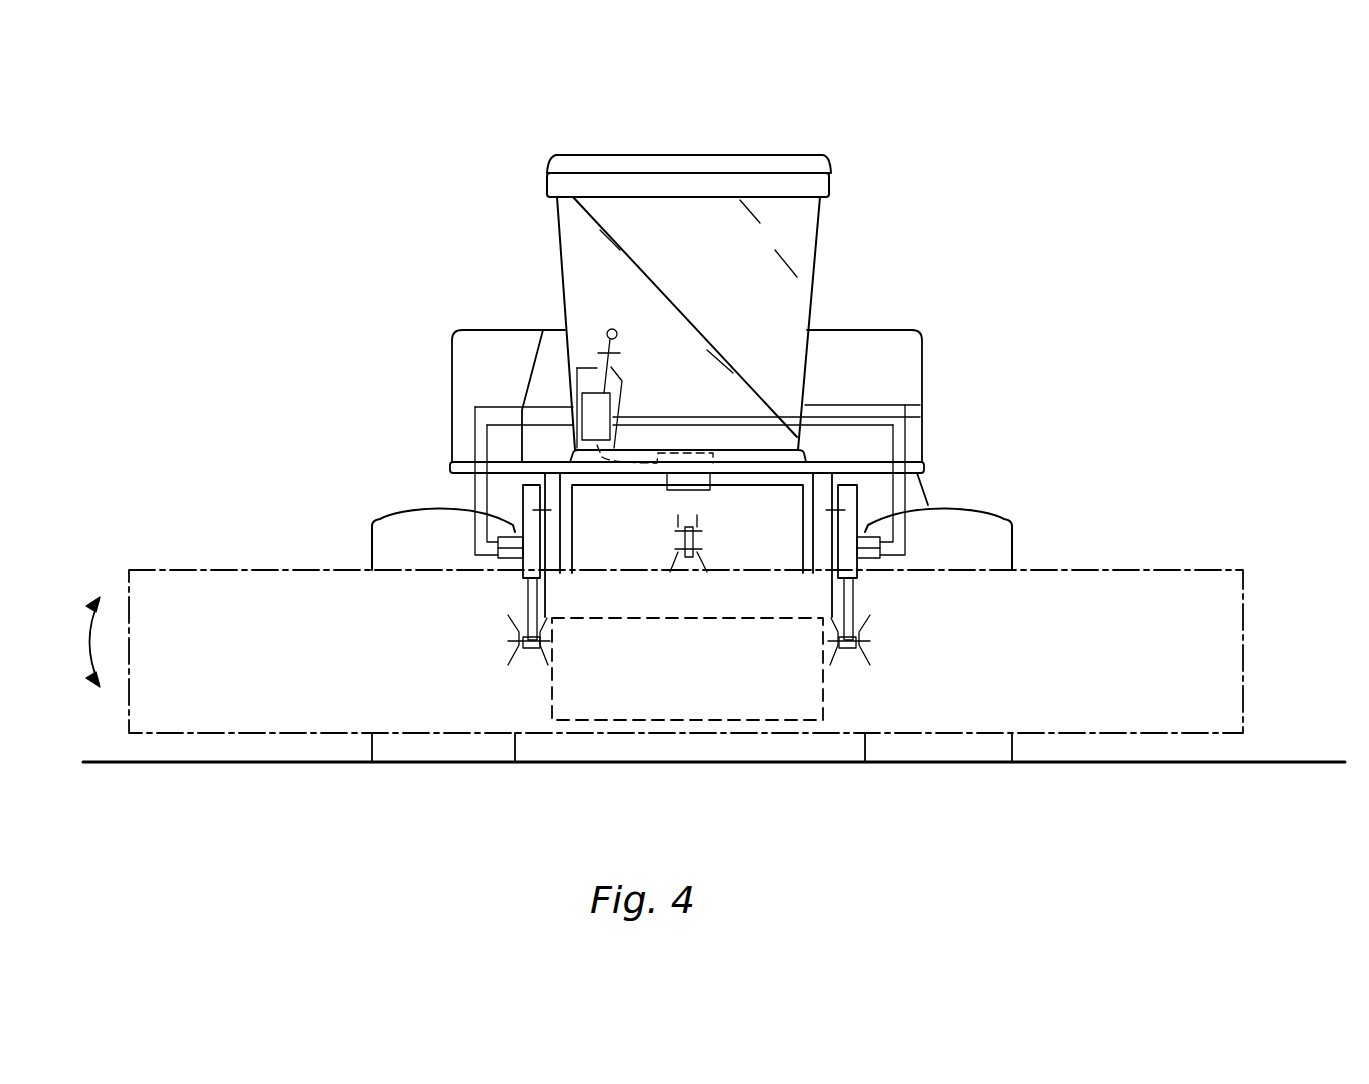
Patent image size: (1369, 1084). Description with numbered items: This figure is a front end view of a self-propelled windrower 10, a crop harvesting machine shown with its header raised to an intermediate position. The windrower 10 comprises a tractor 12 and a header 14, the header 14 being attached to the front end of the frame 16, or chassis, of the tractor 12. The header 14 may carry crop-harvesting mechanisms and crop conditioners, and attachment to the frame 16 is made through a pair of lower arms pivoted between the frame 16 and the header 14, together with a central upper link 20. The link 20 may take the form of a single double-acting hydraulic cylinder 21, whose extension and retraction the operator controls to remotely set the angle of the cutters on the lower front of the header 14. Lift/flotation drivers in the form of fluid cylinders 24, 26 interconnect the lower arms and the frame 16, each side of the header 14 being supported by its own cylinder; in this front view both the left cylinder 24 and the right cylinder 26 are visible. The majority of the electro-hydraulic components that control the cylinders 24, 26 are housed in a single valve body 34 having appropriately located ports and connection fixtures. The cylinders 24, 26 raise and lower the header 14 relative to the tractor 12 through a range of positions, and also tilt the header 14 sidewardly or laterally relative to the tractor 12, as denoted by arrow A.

The self-propelled windrower 10 is at (1038, 163).
The tractor 12 is at (913, 329).
The header 14 is at (1152, 570).
The frame 16 is at (808, 457).
The central upper link 20 is at (687, 617).
The double-acting hydraulic cylinder 21 is at (687, 669).
The left lift/flotation cylinder 24 is at (860, 498).
The right lift/flotation cylinder 26 is at (520, 492).
The valve body 34 is at (688, 455).
The arrow A is at (74, 624).